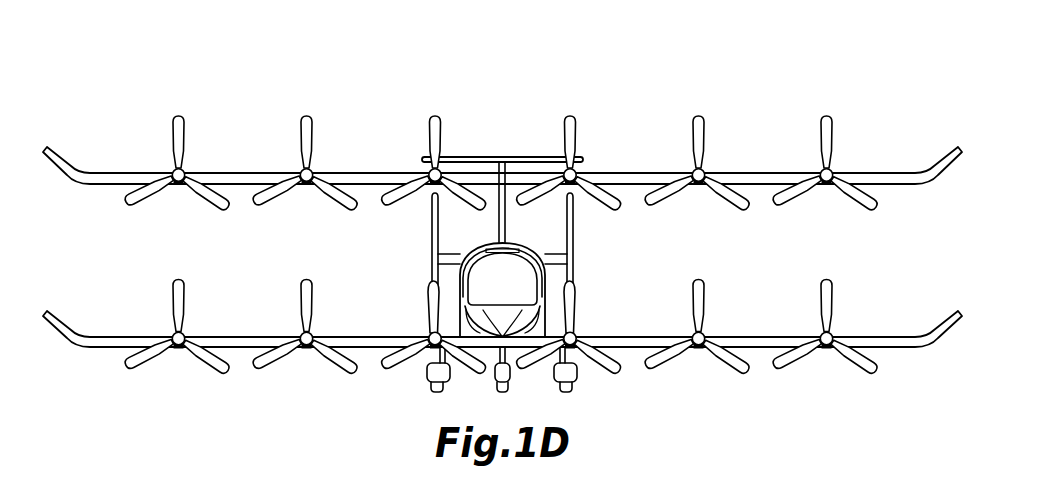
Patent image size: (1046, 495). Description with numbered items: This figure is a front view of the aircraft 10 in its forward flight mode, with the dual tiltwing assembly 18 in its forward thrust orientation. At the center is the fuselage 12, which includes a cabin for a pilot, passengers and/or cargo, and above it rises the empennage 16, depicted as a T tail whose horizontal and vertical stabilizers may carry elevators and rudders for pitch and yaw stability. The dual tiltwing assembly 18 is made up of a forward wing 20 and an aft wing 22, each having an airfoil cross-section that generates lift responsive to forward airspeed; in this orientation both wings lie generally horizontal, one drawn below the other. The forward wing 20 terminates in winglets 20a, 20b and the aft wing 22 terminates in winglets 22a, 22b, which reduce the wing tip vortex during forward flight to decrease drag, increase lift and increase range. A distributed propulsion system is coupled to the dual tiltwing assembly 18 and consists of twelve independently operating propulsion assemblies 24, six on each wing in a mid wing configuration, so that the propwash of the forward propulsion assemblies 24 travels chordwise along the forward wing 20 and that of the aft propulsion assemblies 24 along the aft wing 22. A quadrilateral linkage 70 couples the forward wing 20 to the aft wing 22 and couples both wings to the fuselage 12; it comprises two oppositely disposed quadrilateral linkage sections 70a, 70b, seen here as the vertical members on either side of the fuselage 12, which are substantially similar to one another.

The aircraft 10 is at (628, 72).
The fuselage 12 is at (541, 318).
The empennage 16 is at (510, 158).
The dual tiltwing assembly 18 is at (244, 357).
The forward wing 20 is at (122, 342).
The winglet 20a is at (940, 322).
The winglet 20b is at (65, 322).
The aft wing 22 is at (122, 178).
The winglet 22a is at (938, 158).
The winglet 22b is at (65, 158).
The propulsion assembly 24 is at (301, 169).
The quadrilateral linkage 70 is at (583, 230).
The quadrilateral linkage section 70a is at (574, 268).
The quadrilateral linkage section 70b is at (432, 268).